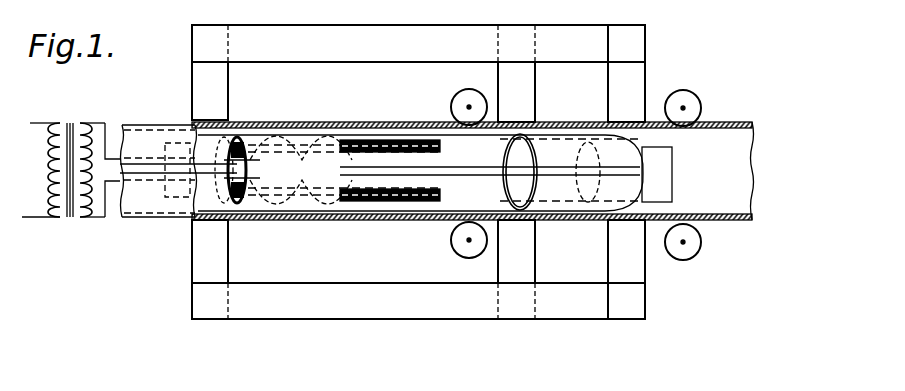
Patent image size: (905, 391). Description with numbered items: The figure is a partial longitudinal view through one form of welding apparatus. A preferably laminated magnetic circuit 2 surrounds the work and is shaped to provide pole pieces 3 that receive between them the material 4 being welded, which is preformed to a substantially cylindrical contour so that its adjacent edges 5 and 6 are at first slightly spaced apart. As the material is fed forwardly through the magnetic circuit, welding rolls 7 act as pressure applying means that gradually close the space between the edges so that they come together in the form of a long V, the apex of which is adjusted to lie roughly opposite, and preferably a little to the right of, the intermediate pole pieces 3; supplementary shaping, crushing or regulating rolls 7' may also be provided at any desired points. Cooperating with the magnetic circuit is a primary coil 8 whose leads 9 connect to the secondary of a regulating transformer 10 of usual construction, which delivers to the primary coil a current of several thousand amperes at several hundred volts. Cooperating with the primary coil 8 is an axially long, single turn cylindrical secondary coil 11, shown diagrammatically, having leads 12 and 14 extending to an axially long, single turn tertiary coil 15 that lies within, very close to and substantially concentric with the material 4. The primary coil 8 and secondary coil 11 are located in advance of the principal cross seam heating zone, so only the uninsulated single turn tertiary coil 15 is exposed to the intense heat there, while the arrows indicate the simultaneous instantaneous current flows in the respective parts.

The magnetic circuit 2 is at (632, 77).
The pole pieces 3 is at (222, 99).
The material being welded 4 is at (350, 121).
The adjacent edge 5 is at (134, 163).
The adjacent edge 6 is at (148, 172).
The welding rolls 7 is at (694, 170).
The supplementary shaping, crushing or regulating rolls 7' is at (453, 170).
The primary coil 8 is at (378, 202).
The leads 9 is at (107, 155).
The regulating transformer 10 is at (70, 188).
The secondary coil 11 is at (306, 134).
The lead 12 is at (492, 180).
The lead 14 is at (495, 165).
The tertiary coil 15 is at (633, 188).